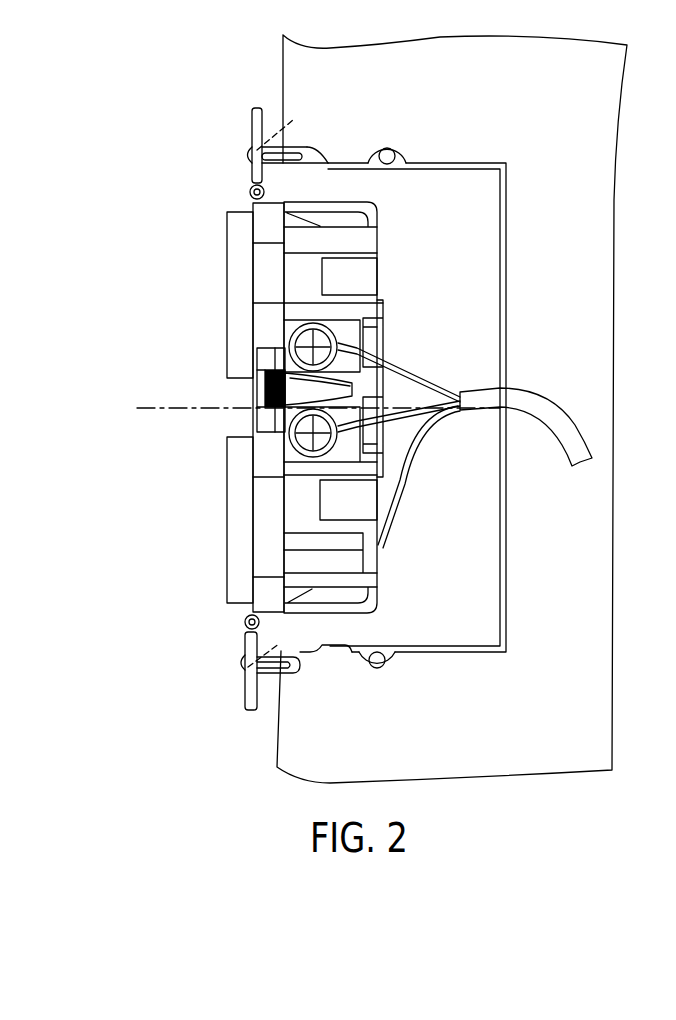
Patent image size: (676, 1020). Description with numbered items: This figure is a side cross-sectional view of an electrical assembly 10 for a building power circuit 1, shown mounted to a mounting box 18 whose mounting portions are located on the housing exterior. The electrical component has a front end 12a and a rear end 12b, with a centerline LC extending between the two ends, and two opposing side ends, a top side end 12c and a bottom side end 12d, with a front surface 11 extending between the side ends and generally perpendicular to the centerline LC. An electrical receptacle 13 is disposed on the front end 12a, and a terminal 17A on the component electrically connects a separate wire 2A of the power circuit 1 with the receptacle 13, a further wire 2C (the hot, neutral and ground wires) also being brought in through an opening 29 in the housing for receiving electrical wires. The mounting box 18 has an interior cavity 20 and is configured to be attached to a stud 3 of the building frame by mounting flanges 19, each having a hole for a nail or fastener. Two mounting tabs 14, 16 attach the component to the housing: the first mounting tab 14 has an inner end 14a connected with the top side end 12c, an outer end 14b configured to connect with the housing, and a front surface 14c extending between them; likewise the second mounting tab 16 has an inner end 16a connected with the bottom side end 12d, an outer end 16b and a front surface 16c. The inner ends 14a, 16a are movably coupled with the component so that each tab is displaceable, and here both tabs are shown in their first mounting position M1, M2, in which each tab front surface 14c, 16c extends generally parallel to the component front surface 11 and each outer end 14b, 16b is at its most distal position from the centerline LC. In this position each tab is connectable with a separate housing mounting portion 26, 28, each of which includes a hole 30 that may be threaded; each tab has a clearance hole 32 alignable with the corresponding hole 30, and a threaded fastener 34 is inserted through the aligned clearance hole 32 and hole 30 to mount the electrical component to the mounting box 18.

The building power circuit 1 is at (570, 394).
The wire 2A is at (416, 383).
The wire 2C is at (403, 500).
The stud 3 is at (600, 130).
The electrical assembly 10 is at (181, 311).
The front surface 11 is at (258, 420).
The front end 12a is at (258, 383).
The rear end 12b is at (385, 326).
The top side end 12c is at (327, 203).
The bottom side end 12d is at (332, 617).
The electrical receptacle 13 is at (233, 266).
The mounting tab 14 is at (204, 146).
The inner end 14a is at (225, 186).
The outer end 14b is at (252, 116).
The front surface 14c is at (250, 136).
The mounting tab 16 is at (202, 663).
The inner end 16a is at (247, 631).
The outer end 16b is at (245, 690).
The front surface 16c is at (245, 646).
The terminal 17A is at (332, 334).
The mounting box 18 is at (525, 273).
The mounting flange 19 is at (394, 140).
The interior cavity 20 is at (451, 190).
The mounting portion 26 is at (298, 147).
The mounting portion 28 is at (293, 678).
The opening 29 is at (506, 376).
The hole 30 is at (305, 160).
The clearance hole 32 is at (278, 380).
The threaded fastener 34 is at (272, 160).
The mounting position M1 is at (256, 130).
The mounting position M2 is at (258, 703).
The centerline LC is at (150, 406).